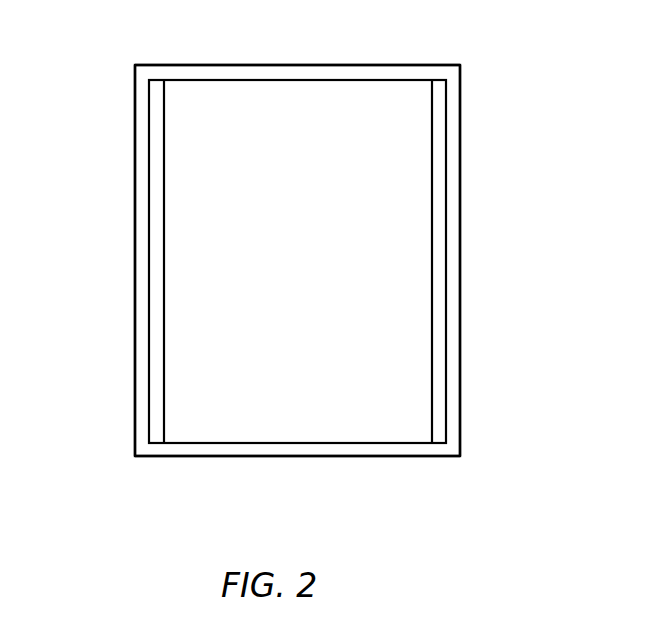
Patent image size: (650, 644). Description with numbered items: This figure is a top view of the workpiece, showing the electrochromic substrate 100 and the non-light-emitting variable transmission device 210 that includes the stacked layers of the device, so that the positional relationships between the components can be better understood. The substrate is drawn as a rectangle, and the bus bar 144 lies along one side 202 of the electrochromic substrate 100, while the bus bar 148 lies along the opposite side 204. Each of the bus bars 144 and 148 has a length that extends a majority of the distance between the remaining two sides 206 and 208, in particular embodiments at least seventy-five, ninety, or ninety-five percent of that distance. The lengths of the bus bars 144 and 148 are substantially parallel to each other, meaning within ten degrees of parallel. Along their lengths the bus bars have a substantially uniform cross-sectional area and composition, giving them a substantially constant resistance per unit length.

The electrochromic substrate 100 is at (455, 254).
The bus bar 144 is at (141, 327).
The bus bar 148 is at (439, 210).
The side 202 is at (134, 127).
The side 204 is at (461, 122).
The side 206 is at (272, 64).
The side 208 is at (312, 459).
The non-light-emitting variable transmission device 210 is at (318, 273).